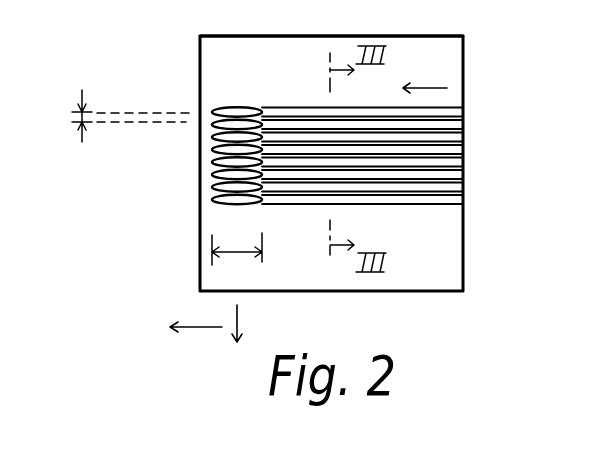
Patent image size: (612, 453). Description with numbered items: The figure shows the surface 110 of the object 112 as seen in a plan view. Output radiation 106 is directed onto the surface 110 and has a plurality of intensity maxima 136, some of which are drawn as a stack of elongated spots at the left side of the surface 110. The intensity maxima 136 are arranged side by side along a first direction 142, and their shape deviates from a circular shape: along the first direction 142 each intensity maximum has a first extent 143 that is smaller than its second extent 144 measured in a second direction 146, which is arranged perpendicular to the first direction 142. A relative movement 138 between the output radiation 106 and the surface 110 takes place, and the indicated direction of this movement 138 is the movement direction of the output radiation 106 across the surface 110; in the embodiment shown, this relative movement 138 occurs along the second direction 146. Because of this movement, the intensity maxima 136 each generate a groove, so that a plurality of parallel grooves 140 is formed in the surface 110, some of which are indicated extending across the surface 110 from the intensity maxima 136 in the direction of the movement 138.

The output radiation 106 is at (277, 182).
The surface 110 is at (217, 62).
The object 112 is at (222, 36).
The intensity maxima 136 is at (212, 117).
The relative movement 138 is at (447, 88).
The parallel grooves 140 is at (463, 115).
The first direction 142 is at (239, 320).
The first extent 143 is at (76, 119).
The second extent 144 is at (240, 253).
The second direction 146 is at (197, 328).